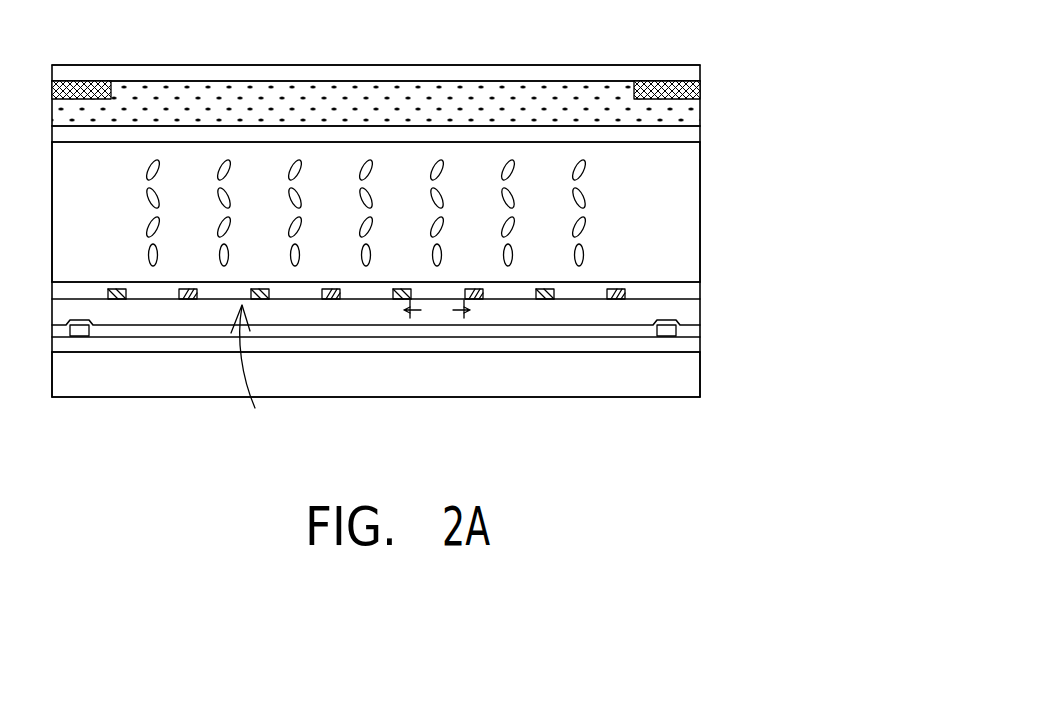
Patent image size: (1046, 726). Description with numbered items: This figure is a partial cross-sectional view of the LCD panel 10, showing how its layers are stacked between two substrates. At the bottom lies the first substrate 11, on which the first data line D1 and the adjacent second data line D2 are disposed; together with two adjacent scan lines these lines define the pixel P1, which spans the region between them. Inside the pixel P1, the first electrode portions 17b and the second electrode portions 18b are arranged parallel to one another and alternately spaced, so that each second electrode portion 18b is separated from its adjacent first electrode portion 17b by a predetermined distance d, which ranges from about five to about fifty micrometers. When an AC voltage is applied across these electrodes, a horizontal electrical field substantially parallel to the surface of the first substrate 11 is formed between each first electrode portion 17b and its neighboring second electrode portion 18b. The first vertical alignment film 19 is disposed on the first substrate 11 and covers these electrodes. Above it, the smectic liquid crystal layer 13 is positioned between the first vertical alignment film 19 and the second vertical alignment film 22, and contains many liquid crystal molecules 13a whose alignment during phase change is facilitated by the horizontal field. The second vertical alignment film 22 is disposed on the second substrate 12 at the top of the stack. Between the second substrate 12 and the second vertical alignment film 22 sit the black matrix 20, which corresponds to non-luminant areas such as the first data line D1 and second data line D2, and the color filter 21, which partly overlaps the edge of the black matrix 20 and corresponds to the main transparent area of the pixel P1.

The LCD panel 10 is at (900, 42).
The first substrate 11 is at (686, 375).
The second substrate 12 is at (690, 75).
The smectic liquid crystal layer 13 is at (690, 178).
The liquid crystal molecules 13a is at (580, 226).
The first electrode portions 17b is at (550, 300).
The second electrode portions 18b is at (625, 293).
The first vertical alignment film 19 is at (686, 290).
The black matrix 20 is at (700, 92).
The color filter 21 is at (685, 110).
The second vertical alignment film 22 is at (690, 135).
The first data line D1 is at (80, 337).
The second data line D2 is at (666, 337).
The pixel P1 is at (250, 380).
The predetermined distance d is at (437, 314).